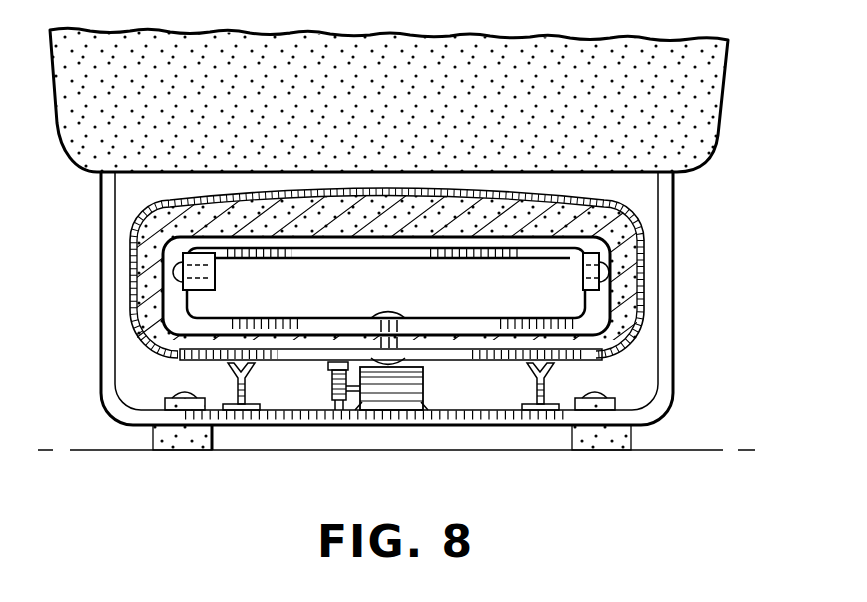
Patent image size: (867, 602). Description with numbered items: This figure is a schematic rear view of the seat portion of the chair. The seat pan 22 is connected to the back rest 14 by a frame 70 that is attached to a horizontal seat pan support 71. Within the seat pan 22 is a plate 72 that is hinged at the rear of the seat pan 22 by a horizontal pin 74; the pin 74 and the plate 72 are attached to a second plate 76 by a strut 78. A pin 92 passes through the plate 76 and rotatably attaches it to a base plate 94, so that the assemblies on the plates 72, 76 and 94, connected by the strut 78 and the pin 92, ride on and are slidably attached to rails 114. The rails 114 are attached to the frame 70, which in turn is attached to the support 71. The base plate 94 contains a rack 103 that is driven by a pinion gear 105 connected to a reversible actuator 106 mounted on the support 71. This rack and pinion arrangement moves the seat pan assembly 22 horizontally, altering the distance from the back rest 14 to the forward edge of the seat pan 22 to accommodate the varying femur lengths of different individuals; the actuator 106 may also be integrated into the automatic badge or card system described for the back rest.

The back rest 14 is at (705, 136).
The seat pan 22 is at (557, 201).
The frame 70 is at (677, 231).
The horizontal seat pan support 71 is at (153, 410).
The plate 72 is at (541, 258).
The horizontal pin 74 is at (600, 269).
The plate 76 is at (455, 318).
The strut 78 is at (582, 311).
The pin 92 is at (383, 311).
The base plate 94 is at (600, 361).
The rack 103 is at (331, 364).
The pinion gear 105 is at (333, 395).
The reversible actuator 106 is at (425, 388).
The rails 114 is at (533, 390).